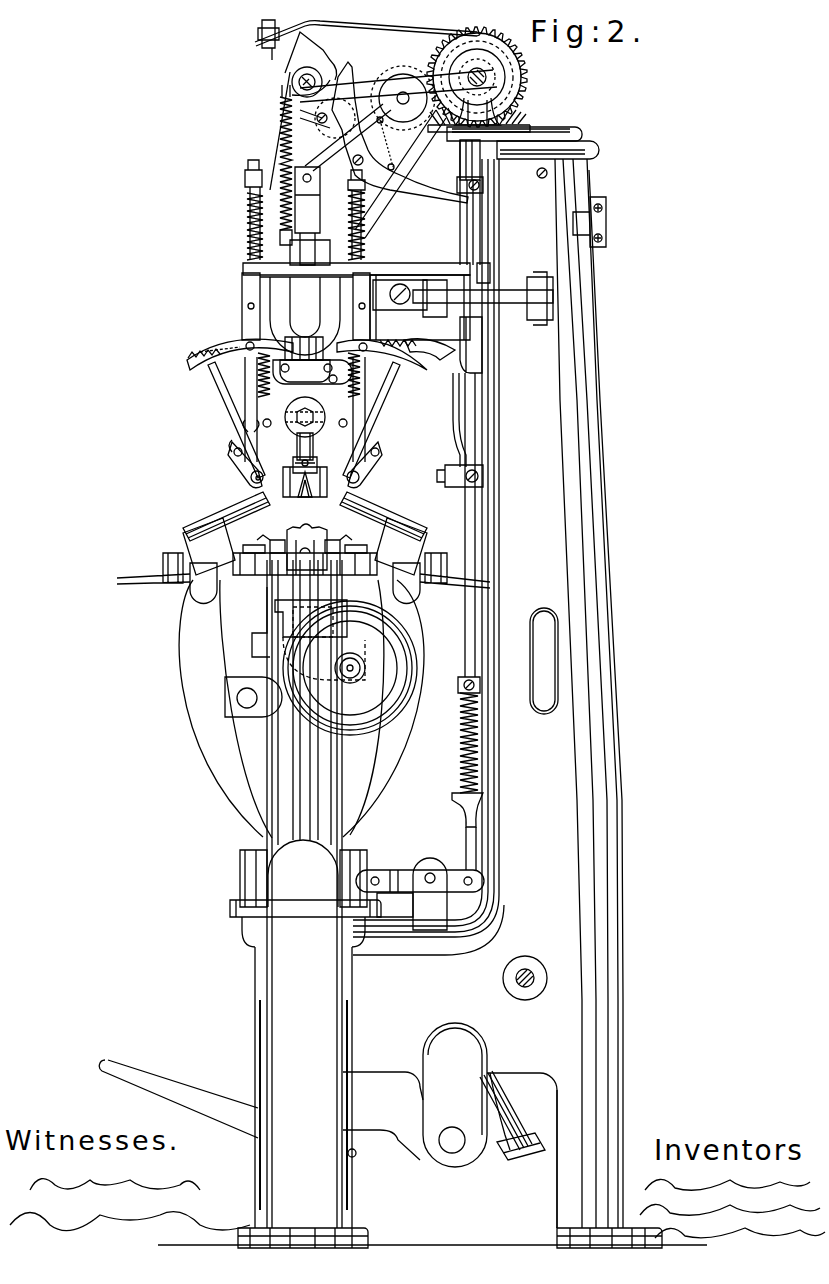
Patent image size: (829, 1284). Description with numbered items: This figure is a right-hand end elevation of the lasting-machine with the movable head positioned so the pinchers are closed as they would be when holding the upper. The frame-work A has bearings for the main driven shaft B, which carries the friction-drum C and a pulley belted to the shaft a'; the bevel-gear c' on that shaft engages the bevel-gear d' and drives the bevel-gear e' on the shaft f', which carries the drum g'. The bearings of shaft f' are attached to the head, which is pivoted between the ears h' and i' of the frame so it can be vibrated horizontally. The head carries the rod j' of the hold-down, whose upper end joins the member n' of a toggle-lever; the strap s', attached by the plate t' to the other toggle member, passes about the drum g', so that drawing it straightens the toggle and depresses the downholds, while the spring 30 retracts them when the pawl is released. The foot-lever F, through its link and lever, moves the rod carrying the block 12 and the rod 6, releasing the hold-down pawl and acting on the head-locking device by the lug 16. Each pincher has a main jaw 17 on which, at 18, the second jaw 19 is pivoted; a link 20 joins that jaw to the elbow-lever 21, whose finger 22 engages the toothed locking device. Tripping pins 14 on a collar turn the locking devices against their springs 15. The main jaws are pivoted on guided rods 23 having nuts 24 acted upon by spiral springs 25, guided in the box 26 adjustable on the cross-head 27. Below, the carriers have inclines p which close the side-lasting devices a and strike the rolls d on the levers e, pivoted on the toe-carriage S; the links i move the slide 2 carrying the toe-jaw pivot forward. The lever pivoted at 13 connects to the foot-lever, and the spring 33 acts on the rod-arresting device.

The frame-work A is at (507, 687).
The side-lasting devices a is at (305, 516).
The shaft a' is at (505, 77).
The main driven shaft B is at (535, 979).
The friction-drum C is at (450, 1145).
The bevel-gear c' is at (509, 78).
The rolls d is at (301, 706).
The bevel-gear d' is at (491, 115).
The levers e is at (305, 560).
The bevel-gear e' is at (477, 63).
The foot-lever F is at (178, 1099).
The shaft f' is at (496, 77).
The drum g' is at (375, 138).
The ear h' is at (458, 160).
The links i is at (304, 556).
The ear i' is at (488, 345).
The rod j' is at (303, 251).
The toggle-lever member n' is at (307, 203).
The clamp plates P is at (305, 546).
The incline p is at (303, 578).
The toe-carriage S is at (273, 603).
The strap s' is at (367, 27).
The plate t' is at (259, 39).
The slide 2 is at (302, 549).
The rod 6 is at (476, 226).
The block 12 is at (462, 485).
The pivot 13 is at (428, 876).
The projecting pins 14 is at (312, 372).
The springs 15 is at (256, 373).
The lug 16 is at (487, 264).
The main jaw 17 is at (357, 451).
The pivot 18 is at (250, 475).
The second jaw 19 is at (258, 485).
The link 20 is at (246, 443).
The elbow-lever 21 is at (222, 388).
The finger 22 is at (209, 352).
The guided rod 23 is at (244, 295).
The nut 24 is at (246, 180).
The spiral spring 25 is at (248, 203).
The box 26 is at (306, 316).
The cross-head 27 is at (305, 329).
The spring 30 is at (277, 165).
The spring 33 is at (298, 432).